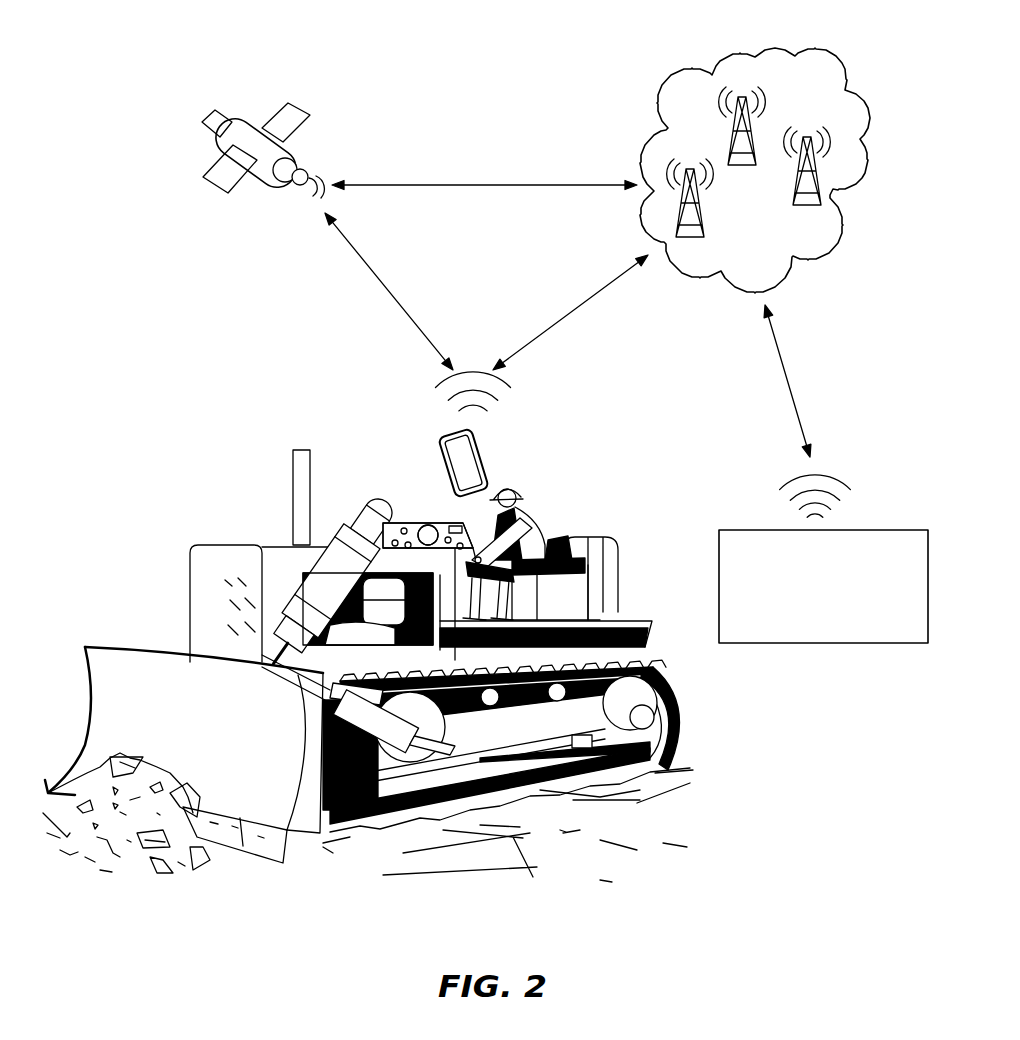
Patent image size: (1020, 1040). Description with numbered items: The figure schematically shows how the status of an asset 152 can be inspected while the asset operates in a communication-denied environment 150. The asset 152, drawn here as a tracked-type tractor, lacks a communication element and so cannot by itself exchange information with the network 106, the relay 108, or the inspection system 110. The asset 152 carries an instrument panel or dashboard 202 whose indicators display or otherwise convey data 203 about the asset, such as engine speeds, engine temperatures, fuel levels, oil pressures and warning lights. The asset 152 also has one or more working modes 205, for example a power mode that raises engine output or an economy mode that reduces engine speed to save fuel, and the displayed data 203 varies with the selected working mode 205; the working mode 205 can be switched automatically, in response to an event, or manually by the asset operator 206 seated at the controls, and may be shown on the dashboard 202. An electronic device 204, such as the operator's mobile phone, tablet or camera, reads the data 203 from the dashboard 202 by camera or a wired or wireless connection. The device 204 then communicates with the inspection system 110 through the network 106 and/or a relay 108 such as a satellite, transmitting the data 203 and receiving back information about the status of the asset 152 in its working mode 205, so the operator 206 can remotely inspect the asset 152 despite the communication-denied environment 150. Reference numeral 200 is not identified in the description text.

The network 106 is at (838, 50).
The relay 108 is at (200, 133).
The inspection system 110 is at (907, 528).
The communication-denied environment 150 is at (285, 315).
The asset 152 is at (217, 547).
The machine (dozer) 200 is at (246, 420).
The dashboard 202 is at (408, 522).
The data 203 is at (441, 506).
The electronic device 204 is at (484, 443).
The working mode 205 is at (285, 588).
The asset operator 206 is at (527, 494).